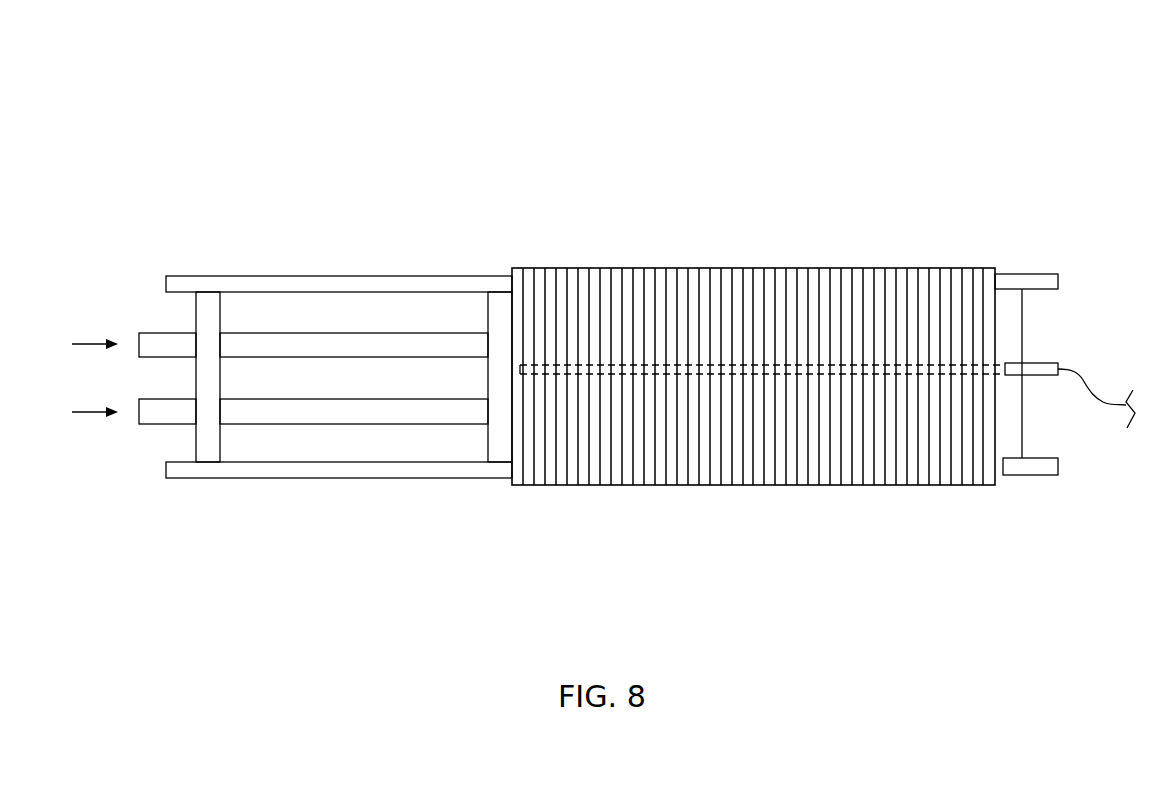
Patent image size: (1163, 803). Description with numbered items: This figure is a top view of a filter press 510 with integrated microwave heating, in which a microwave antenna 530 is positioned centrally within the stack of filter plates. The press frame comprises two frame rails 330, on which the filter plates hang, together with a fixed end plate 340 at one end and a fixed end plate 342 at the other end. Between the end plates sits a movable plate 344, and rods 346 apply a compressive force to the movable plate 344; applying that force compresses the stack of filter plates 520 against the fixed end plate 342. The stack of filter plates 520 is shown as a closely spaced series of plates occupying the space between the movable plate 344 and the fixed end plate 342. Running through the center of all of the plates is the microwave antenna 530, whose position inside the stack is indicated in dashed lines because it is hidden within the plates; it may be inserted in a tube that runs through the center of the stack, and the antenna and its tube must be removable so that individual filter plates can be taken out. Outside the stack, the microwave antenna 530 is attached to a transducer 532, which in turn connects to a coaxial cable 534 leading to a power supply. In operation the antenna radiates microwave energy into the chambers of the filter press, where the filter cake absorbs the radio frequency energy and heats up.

The filter press 510 is at (455, 137).
The frame rails 330 is at (355, 276).
The fixed end plate 340 is at (203, 310).
The movable plate 344 is at (497, 318).
The rods 346 is at (173, 410).
The stack of filter plates 520 is at (531, 465).
The microwave antenna 530 is at (675, 372).
The fixed end plate 342 is at (1008, 317).
The transducer 532 is at (1037, 368).
The coaxial cable 534 is at (1102, 403).